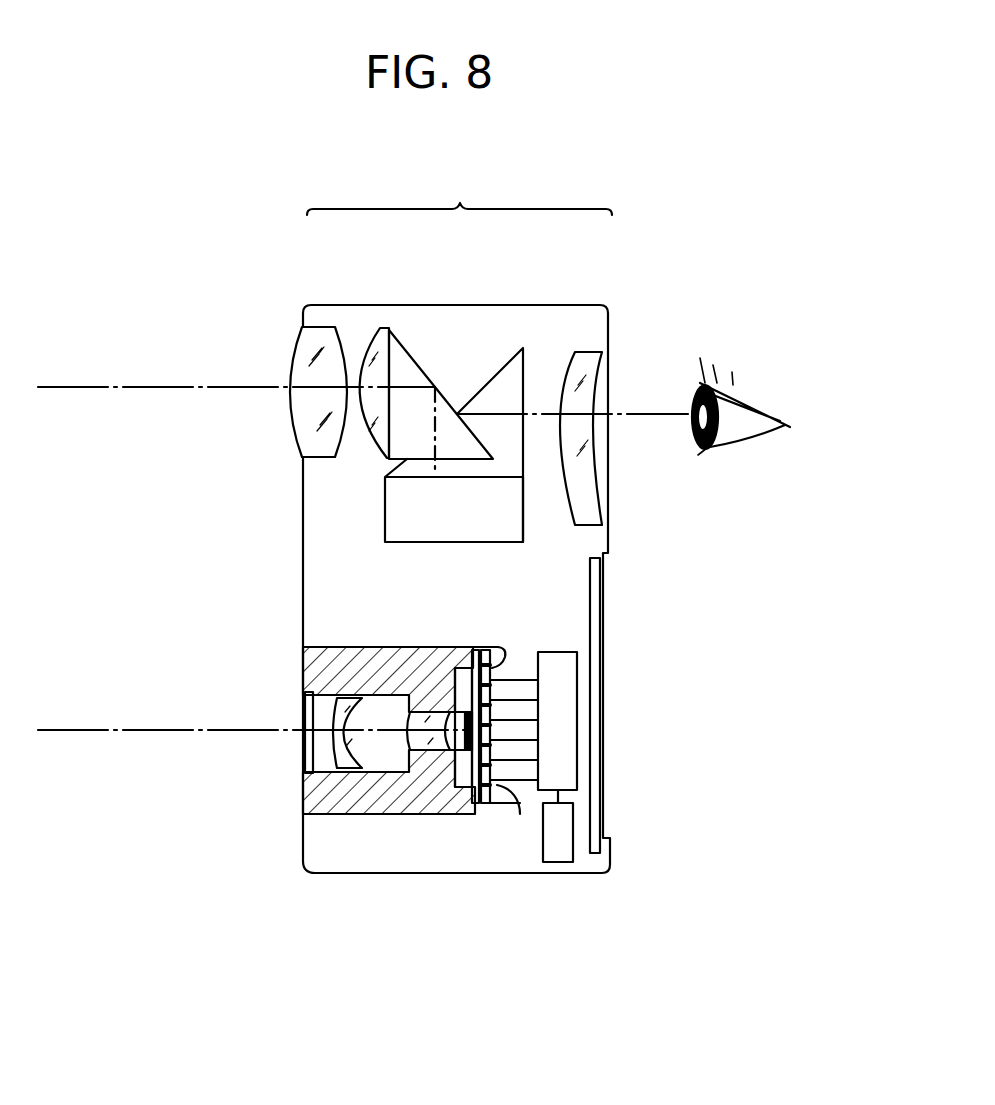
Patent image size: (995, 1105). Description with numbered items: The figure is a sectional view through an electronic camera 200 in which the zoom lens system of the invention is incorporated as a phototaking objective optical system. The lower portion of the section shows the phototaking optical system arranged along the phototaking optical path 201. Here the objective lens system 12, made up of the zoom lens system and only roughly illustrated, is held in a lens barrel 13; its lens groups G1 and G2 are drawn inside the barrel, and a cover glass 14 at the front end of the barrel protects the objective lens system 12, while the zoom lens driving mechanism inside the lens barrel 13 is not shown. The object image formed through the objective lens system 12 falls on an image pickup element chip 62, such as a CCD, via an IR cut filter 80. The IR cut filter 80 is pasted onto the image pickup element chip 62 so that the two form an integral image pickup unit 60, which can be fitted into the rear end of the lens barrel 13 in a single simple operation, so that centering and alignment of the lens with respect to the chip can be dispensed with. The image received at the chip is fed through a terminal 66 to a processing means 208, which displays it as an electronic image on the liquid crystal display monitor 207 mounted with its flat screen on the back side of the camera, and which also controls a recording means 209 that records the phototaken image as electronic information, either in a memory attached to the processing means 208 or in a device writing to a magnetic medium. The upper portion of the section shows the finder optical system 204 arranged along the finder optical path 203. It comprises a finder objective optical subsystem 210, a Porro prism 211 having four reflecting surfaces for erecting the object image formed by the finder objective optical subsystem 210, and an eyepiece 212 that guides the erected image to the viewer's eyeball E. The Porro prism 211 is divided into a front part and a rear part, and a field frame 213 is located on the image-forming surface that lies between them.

The electronic camera 200 is at (268, 512).
The phototaking optical path 201 is at (145, 730).
The finder optical path 203 is at (143, 387).
The finder optical system 204 is at (459, 190).
The finder objective optical subsystem 210 is at (378, 340).
The field frame 213 is at (409, 475).
The Porro prism 211 is at (422, 376).
The eyepiece 212 is at (583, 363).
The viewer's eyeball E is at (742, 437).
The objective lens system 12 is at (310, 758).
The cover glass 14 is at (303, 747).
The first lens group G1 is at (352, 772).
The second lens group G2 is at (420, 752).
The lens barrel 13 is at (453, 650).
The image pickup unit 60 is at (498, 636).
The image pickup element chip 62 is at (462, 790).
The terminal 66 is at (517, 814).
The IR cut filter 80 is at (453, 717).
The processing means 208 is at (573, 673).
The liquid crystal display monitor 207 is at (600, 805).
The recording means 209 is at (558, 862).